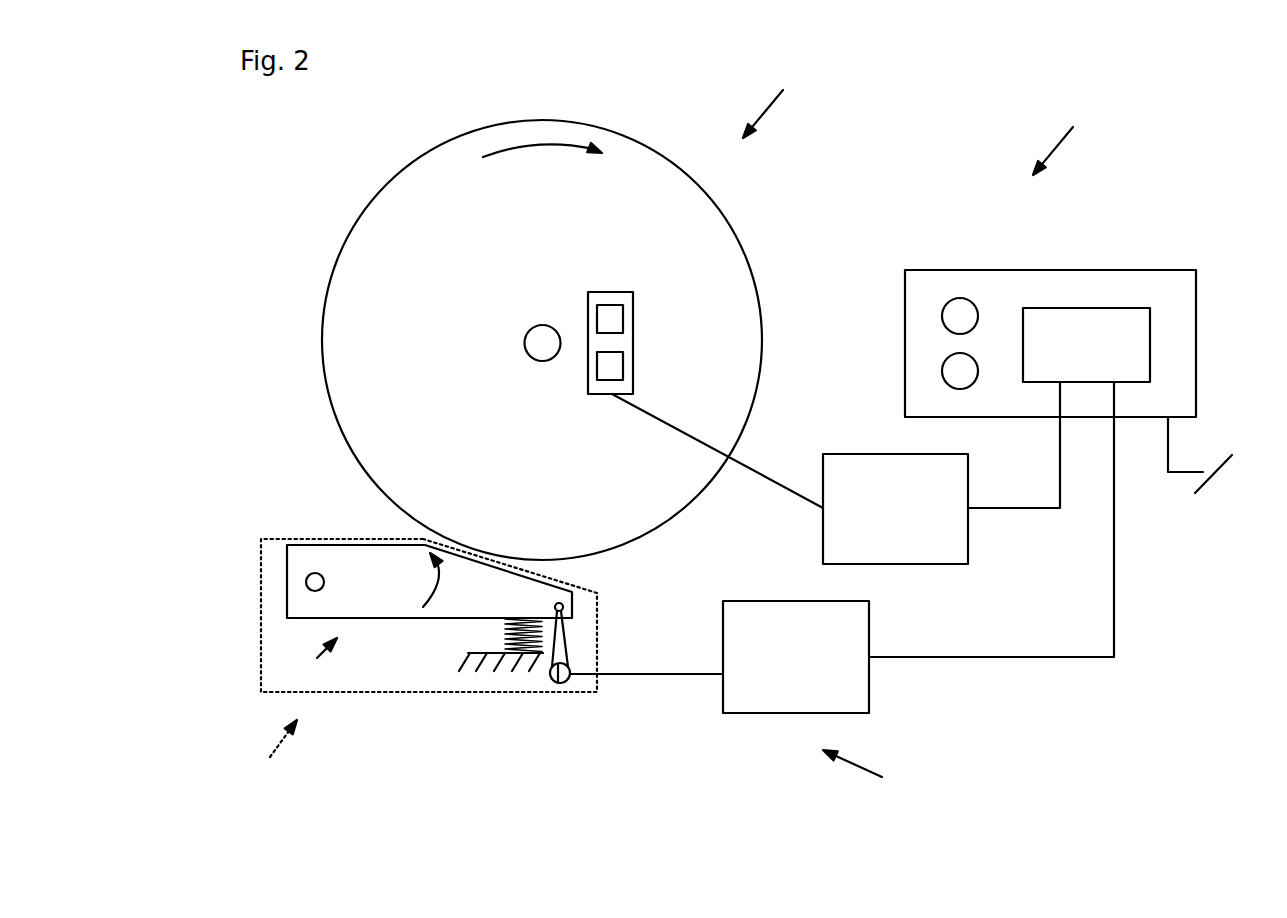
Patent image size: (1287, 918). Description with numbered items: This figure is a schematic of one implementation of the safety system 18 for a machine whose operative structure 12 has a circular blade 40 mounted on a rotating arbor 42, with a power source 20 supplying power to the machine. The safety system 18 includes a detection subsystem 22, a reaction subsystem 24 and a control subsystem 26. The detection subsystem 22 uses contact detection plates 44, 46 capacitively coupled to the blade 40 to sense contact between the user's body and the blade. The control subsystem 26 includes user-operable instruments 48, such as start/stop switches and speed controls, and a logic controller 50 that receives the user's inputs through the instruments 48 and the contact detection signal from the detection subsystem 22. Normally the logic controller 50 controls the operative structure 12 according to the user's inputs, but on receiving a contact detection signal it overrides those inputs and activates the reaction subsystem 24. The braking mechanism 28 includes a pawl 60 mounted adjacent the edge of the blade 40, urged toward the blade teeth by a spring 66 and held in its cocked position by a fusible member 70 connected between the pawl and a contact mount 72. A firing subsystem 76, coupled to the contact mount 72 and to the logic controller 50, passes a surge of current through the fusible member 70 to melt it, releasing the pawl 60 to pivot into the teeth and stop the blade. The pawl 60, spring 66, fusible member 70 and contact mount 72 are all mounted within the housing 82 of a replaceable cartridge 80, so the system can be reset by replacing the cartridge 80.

The operative structure 12 is at (783, 104).
The safety system 18 is at (1072, 141).
The power source 20 is at (1204, 466).
The detection subsystem 22 is at (951, 498).
The reaction subsystem 24 is at (873, 774).
The control subsystem 26 is at (1088, 270).
The braking mechanism 28 is at (310, 659).
The circular blade 40 is at (461, 228).
The arbor 42 is at (530, 348).
The contact detection plate 44 is at (620, 315).
The contact detection plate 46 is at (620, 360).
The instruments 48 is at (948, 317).
The logic controller 50 is at (1132, 350).
The pawl 60 is at (337, 555).
The spring 66 is at (481, 638).
The fusible member 70 is at (568, 655).
The contact mount 72 is at (555, 682).
The firing subsystem 76 is at (851, 643).
The replaceable cartridge 80 is at (267, 747).
The housing 82 is at (350, 692).